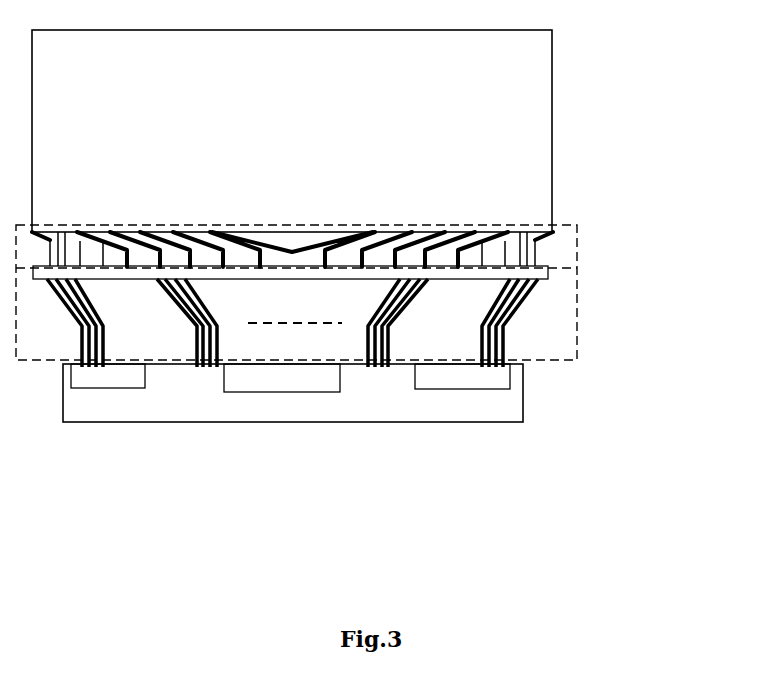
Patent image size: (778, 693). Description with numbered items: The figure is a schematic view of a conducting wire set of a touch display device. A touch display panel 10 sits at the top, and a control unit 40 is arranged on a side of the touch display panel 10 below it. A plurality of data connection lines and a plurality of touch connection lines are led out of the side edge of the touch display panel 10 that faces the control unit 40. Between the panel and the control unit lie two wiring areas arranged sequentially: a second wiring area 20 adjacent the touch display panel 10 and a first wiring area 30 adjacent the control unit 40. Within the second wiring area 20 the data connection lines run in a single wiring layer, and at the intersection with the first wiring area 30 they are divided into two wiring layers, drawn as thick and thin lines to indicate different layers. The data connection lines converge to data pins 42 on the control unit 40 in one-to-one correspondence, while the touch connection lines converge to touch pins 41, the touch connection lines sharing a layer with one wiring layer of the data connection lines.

The touch display panel 10 is at (522, 84).
The second wiring area 20 is at (567, 243).
The first wiring area 30 is at (564, 307).
The control unit 40 is at (497, 406).
The touch pin 41 is at (290, 376).
The data pin 42 is at (282, 378).